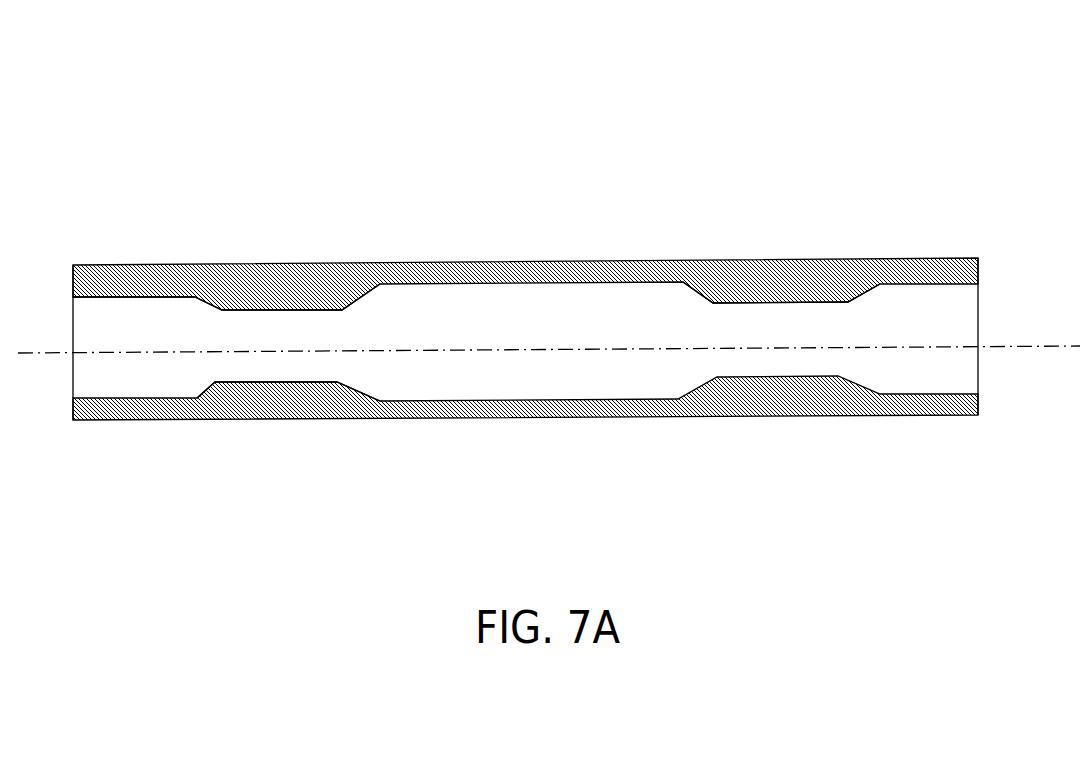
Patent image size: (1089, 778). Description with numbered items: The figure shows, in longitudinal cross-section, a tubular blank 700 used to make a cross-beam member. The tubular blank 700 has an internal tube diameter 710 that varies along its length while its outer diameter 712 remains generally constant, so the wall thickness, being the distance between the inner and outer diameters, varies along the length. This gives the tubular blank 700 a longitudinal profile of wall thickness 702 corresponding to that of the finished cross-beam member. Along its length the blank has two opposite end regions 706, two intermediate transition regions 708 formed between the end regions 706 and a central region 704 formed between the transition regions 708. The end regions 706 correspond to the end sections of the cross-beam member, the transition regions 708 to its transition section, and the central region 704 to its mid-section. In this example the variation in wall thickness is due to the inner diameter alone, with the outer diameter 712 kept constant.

The tubular blank 700 is at (873, 160).
The longitudinal profile of wall thickness 702 is at (858, 301).
The central region 704 is at (553, 265).
The end regions 706 is at (107, 283).
The transition regions 708 is at (267, 283).
The internal tube diameter 710 is at (207, 384).
The outer diameter 712 is at (215, 422).